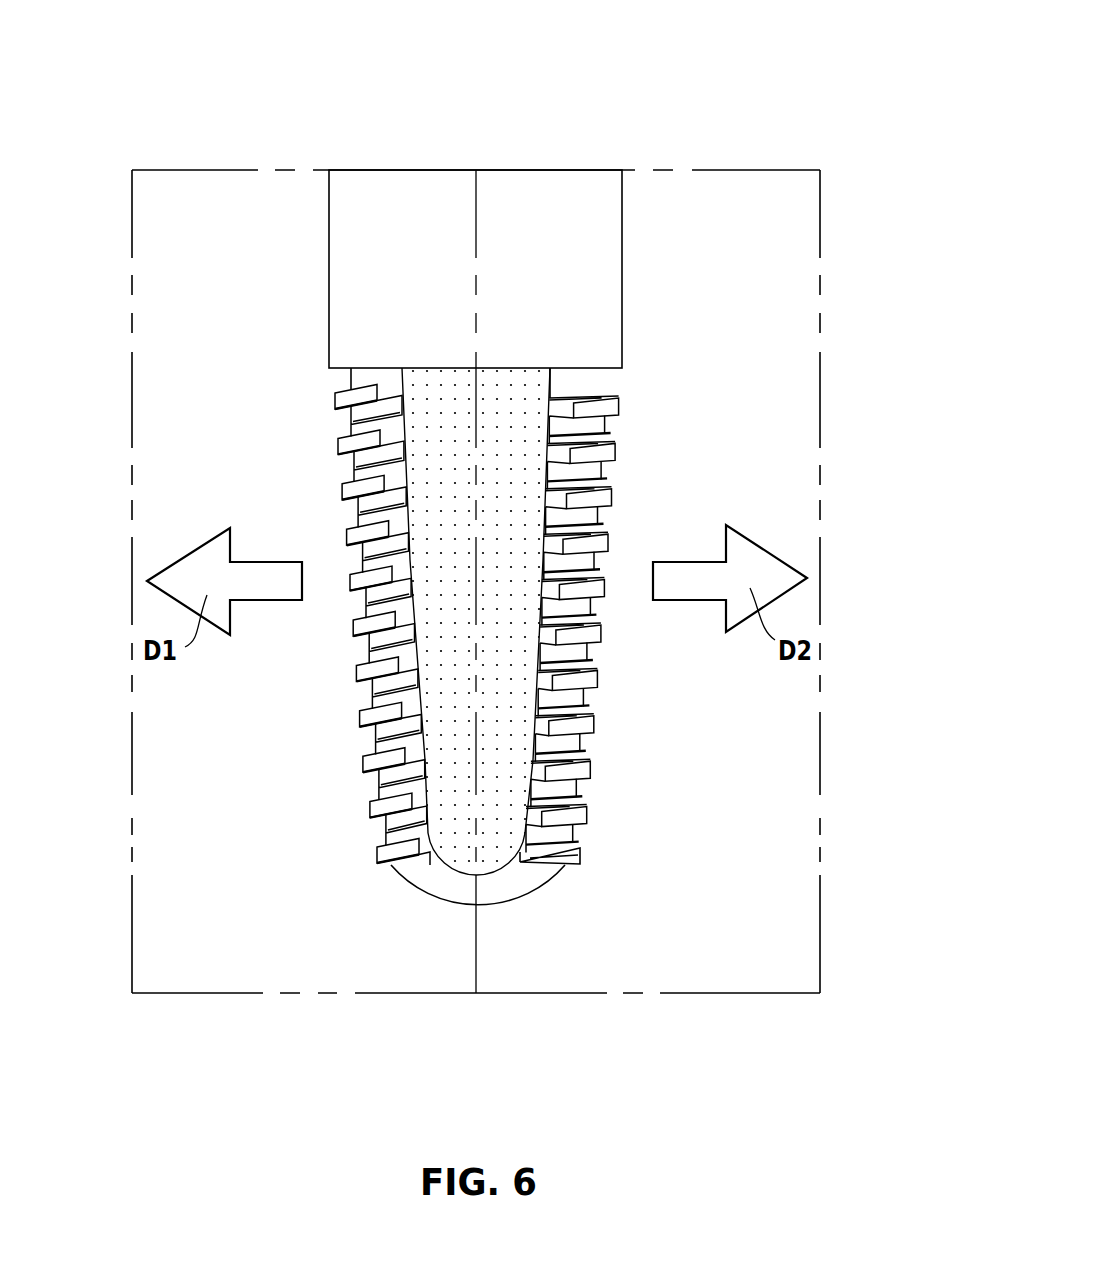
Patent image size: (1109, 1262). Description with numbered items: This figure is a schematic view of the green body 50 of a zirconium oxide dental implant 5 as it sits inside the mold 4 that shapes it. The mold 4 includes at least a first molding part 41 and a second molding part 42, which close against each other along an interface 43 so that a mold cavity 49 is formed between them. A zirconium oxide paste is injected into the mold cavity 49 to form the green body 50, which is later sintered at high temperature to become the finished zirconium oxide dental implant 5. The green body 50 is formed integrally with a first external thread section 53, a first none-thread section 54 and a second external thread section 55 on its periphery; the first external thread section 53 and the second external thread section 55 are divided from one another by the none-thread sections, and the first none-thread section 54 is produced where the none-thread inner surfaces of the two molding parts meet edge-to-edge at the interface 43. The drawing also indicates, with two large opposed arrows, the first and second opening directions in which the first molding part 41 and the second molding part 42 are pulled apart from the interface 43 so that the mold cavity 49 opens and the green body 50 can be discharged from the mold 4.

The mold 4 is at (478, 641).
The first molding part 41 is at (160, 488).
The second molding part 42 is at (797, 487).
The interface 43 is at (478, 935).
The zirconium oxide dental implant 5 is at (516, 479).
The green body 50 is at (516, 479).
The mold cavity 49 is at (340, 857).
The first external thread section 53 is at (365, 762).
The first none-thread section 54 is at (512, 498).
The second external thread section 55 is at (587, 722).